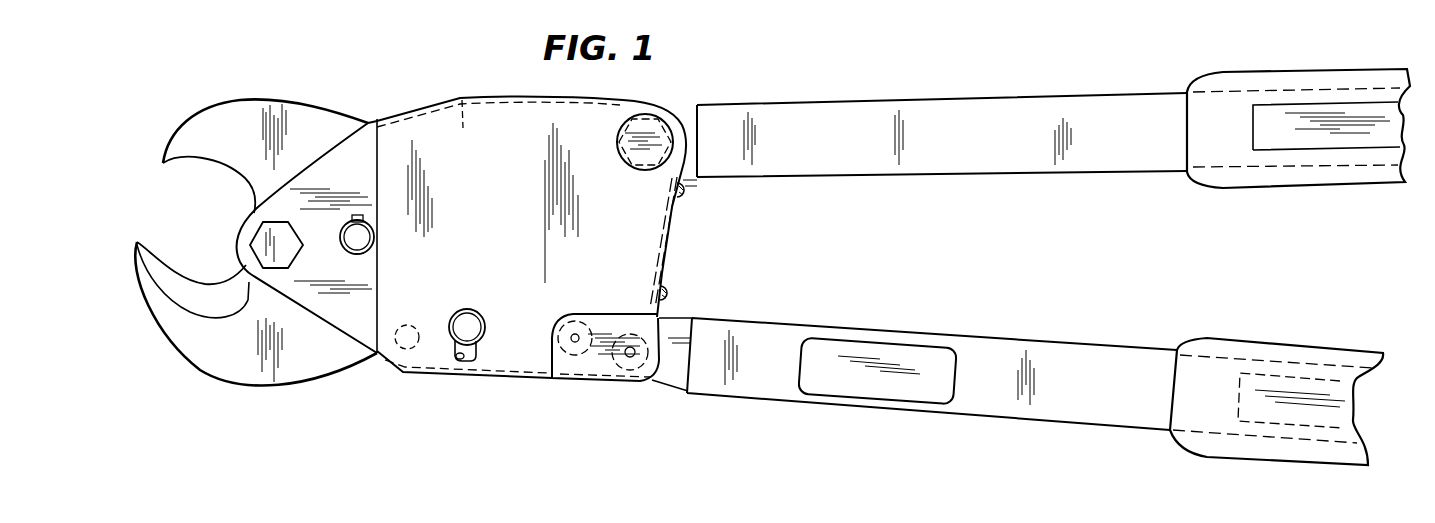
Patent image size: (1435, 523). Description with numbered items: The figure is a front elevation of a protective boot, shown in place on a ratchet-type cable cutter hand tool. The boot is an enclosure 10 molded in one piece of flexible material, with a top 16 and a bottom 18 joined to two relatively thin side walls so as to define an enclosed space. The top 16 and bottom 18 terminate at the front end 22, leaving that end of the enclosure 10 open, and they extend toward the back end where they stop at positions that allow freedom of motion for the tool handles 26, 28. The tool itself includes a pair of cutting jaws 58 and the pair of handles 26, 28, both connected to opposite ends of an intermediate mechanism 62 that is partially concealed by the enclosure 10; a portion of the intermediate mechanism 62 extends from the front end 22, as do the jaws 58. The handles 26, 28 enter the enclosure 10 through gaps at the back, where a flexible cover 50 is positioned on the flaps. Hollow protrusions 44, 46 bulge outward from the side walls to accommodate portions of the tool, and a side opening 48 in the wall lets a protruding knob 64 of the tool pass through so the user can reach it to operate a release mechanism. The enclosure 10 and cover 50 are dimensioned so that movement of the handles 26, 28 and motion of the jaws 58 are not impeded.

The enclosure 10 is at (513, 92).
The top 16 is at (598, 99).
The bottom 18 is at (507, 379).
The front end 22 is at (376, 173).
The handle 26 is at (793, 113).
The handle 28 is at (772, 330).
The hollow protrusion 44 is at (634, 171).
The hollow protrusion 46 is at (607, 313).
The side opening 48 is at (462, 363).
The cover 50 is at (648, 237).
The cutting jaws 58 is at (312, 94).
The intermediate mechanism 62 is at (460, 97).
The knob 64 is at (483, 304).